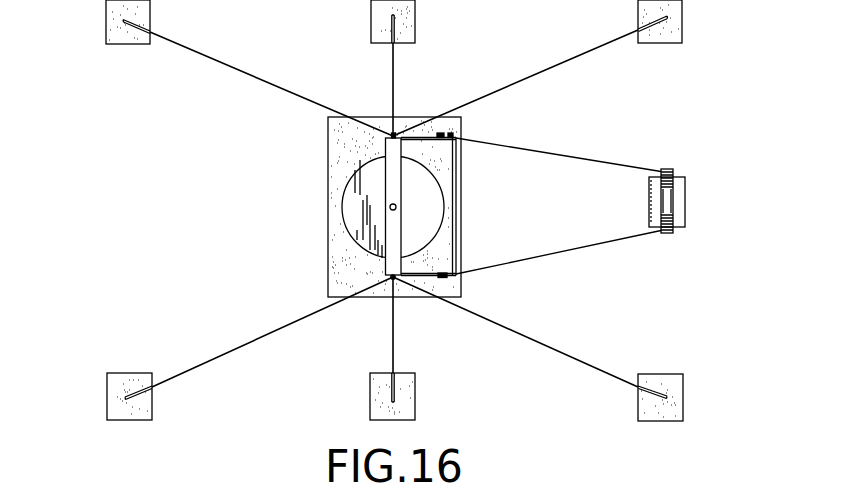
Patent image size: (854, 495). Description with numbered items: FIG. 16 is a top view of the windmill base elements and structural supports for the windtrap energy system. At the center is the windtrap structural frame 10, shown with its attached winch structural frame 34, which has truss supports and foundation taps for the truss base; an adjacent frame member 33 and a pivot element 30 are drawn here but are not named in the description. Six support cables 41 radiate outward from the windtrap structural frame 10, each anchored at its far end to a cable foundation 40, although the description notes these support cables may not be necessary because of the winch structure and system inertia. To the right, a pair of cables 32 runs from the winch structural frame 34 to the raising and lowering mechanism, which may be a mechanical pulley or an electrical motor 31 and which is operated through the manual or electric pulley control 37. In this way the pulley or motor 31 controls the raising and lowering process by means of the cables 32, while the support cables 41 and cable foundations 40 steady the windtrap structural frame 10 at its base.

The windtrap structural frame 10 is at (385, 188).
The connector assembly 30 is at (708, 198).
The electrical motor 31 is at (668, 200).
The cables 32 is at (595, 243).
The mounting frame 33 is at (462, 206).
The winch structural frame 34 is at (422, 136).
The manual or electric pulley control 37 is at (669, 235).
The cable foundation 40 is at (106, 23).
The support cables 41 is at (392, 72).